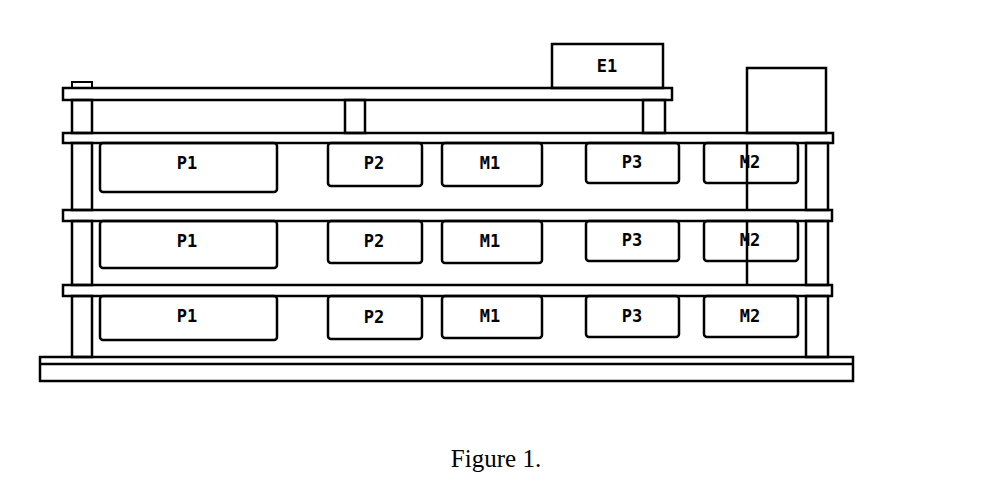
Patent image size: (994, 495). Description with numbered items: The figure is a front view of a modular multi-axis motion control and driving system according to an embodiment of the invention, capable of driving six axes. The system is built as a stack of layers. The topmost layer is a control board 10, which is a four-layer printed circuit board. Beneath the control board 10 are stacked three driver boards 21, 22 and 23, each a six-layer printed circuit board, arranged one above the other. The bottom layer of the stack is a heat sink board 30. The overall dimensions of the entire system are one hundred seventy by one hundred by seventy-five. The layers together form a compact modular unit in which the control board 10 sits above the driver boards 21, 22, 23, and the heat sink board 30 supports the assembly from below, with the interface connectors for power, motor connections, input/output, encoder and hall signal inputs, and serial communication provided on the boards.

The control board 10 is at (668, 88).
The driver board 21 is at (778, 139).
The driver board 22 is at (785, 211).
The driver board 23 is at (787, 287).
The heat sink board 30 is at (775, 370).